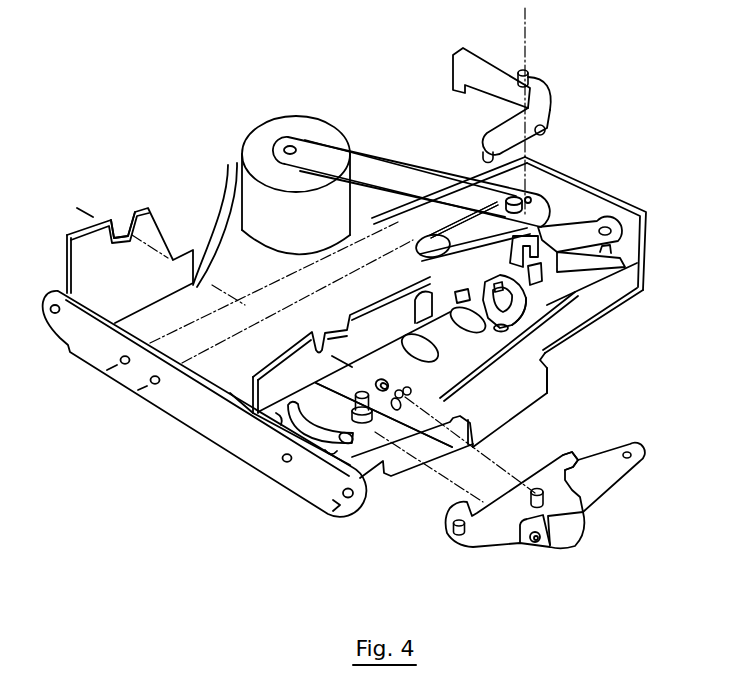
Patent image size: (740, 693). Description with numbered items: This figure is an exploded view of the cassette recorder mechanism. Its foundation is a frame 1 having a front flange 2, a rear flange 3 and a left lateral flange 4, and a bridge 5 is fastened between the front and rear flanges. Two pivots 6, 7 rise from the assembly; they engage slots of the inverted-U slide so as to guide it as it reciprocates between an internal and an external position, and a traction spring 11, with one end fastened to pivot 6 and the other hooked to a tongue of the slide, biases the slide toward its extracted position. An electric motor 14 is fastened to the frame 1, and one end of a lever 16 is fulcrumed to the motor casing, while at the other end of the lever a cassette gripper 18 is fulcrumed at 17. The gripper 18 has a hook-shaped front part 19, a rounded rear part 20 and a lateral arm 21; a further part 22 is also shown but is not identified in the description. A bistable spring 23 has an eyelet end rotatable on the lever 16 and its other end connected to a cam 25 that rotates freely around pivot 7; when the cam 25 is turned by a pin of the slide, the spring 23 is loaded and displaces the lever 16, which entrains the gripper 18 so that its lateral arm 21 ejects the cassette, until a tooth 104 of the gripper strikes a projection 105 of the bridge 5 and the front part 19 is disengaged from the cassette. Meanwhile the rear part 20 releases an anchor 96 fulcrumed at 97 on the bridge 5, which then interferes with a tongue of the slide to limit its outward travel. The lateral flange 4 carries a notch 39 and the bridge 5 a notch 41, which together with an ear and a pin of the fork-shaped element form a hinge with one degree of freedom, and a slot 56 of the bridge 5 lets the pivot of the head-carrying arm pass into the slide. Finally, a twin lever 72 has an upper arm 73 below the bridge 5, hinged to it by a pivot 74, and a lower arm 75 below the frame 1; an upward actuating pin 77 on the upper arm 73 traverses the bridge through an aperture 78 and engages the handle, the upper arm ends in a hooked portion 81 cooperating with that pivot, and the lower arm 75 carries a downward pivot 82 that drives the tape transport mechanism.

The frame 1 is at (228, 263).
The front flange 2 is at (181, 413).
The rear flange 3 is at (632, 220).
The left lateral flange 4 is at (83, 263).
The bridge 5 is at (440, 353).
The pivot 6 is at (350, 401).
The pivot 7 is at (518, 315).
The traction spring 11 is at (407, 398).
The electric motor 14 is at (258, 143).
The lever 16 is at (391, 162).
The fulcrum 17 is at (528, 75).
The cassette gripper 18 is at (528, 133).
The hook-shaped front part 19 is at (485, 133).
The rounded rear part 20 is at (548, 102).
The lateral arm 21 is at (463, 50).
The spring clip 22 is at (414, 312).
The bistable spring 23 is at (410, 239).
The cam 25 is at (520, 310).
The notch 39 is at (119, 232).
The notch 41 is at (319, 350).
The slot 56 is at (437, 357).
The twin lever 72 is at (558, 504).
The upper arm 73 is at (502, 525).
The pivot 74 is at (524, 485).
The lower arm 75 is at (590, 493).
The actuating pin 77 is at (455, 537).
The aperture 78 is at (293, 424).
The hooked portion 81 is at (575, 460).
The pivot 82 is at (633, 473).
The anchor 96 is at (590, 230).
The fulcrum 97 is at (610, 222).
The tooth 104 is at (545, 130).
The projection 105 is at (500, 290).